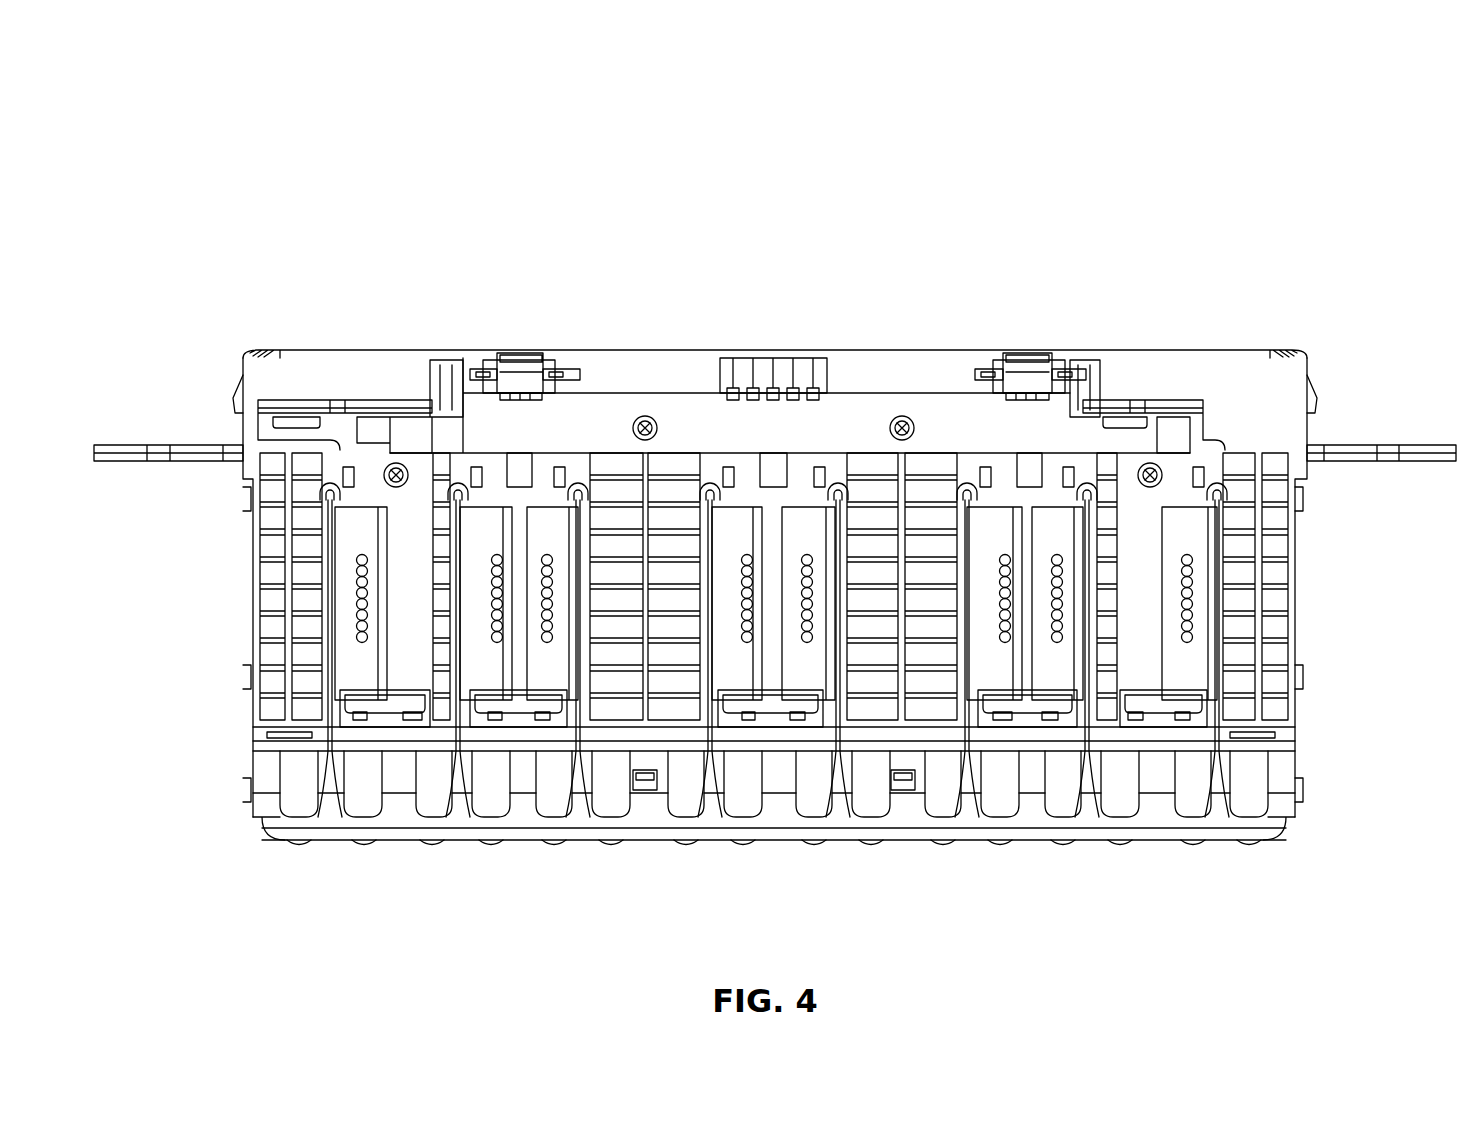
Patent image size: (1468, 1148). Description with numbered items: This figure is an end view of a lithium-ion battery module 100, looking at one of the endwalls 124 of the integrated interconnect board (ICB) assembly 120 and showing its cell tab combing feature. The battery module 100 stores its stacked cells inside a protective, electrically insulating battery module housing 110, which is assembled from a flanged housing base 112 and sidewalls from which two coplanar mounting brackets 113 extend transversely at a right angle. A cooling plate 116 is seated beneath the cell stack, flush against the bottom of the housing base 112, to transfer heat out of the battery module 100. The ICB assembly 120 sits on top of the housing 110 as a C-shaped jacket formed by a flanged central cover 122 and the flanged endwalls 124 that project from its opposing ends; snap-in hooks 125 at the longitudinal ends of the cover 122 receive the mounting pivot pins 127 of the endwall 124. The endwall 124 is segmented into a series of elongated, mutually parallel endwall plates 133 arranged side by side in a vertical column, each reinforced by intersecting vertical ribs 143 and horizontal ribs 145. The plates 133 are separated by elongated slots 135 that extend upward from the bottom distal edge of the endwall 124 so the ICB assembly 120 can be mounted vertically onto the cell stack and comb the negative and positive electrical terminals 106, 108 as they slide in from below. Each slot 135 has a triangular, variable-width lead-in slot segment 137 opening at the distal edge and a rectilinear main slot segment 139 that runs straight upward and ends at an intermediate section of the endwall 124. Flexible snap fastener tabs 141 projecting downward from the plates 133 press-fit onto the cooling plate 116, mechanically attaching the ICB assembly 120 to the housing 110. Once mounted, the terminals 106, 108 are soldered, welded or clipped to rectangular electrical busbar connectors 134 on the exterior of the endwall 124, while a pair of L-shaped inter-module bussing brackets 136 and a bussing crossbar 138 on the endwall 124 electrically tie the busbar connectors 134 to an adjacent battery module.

The battery module 100 is at (212, 158).
The negative electrical terminal 106 is at (362, 507).
The positive electrical terminal 108 is at (472, 507).
The battery module housing 110 is at (1288, 950).
The housing base 112 is at (1300, 832).
The mounting bracket 113 is at (122, 445).
The cooling plate 116 is at (275, 842).
The integrated interconnect board assembly 120 is at (212, 609).
The central cover 122 is at (903, 352).
The endwall 124 is at (1290, 355).
The snap-in hook 125 is at (520, 360).
The mounting pivot pin 127 is at (490, 369).
The endwall plate 133 is at (420, 800).
The electrical busbar connector 134 is at (290, 736).
The elongated slot 135 is at (330, 483).
The inter-module bussing bracket 136 is at (355, 695).
The lead-in slot segment 137 is at (337, 800).
The bussing crossbar 138 is at (873, 427).
The main slot segment 139 is at (315, 843).
The snap fastener tab 141 is at (373, 822).
The vertical rib 143 is at (620, 468).
The horizontal rib 145 is at (663, 455).